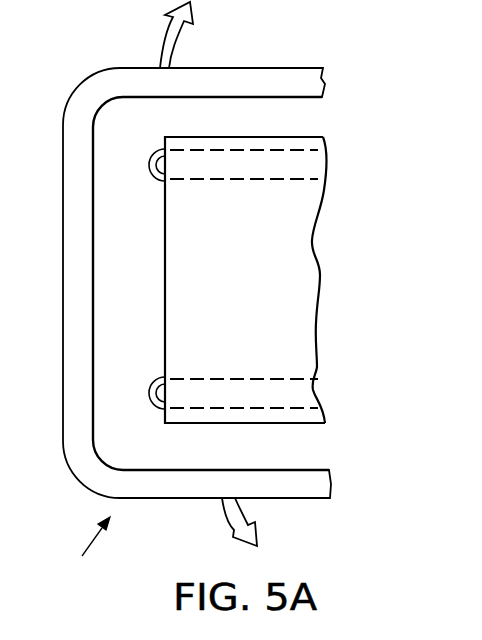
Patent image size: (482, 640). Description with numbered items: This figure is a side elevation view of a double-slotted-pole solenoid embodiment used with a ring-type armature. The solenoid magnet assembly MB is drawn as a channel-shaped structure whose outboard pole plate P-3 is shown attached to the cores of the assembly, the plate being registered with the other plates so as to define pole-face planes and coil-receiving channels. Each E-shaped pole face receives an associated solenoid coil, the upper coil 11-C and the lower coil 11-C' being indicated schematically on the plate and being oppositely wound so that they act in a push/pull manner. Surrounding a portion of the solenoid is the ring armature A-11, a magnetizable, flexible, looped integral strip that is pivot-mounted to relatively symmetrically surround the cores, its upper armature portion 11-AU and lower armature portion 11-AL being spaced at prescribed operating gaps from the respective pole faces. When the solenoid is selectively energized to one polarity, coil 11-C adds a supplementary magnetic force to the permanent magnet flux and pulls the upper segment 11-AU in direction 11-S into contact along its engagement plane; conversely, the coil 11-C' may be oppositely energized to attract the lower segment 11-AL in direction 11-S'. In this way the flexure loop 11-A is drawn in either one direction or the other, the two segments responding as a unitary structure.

The flexure loop 11-A is at (88, 76).
The upper armature portion 11-AU is at (282, 80).
The lower armature portion 11-AL is at (144, 490).
The solenoid magnet assembly MB is at (63, 267).
The outboard pole plate P-3 is at (293, 291).
The solenoid coil 11-C is at (263, 182).
The solenoid coil 11-C' is at (265, 388).
The attraction direction 11-S is at (146, 34).
The attraction direction 11-S' is at (277, 522).
The ring armature A-11 is at (81, 546).